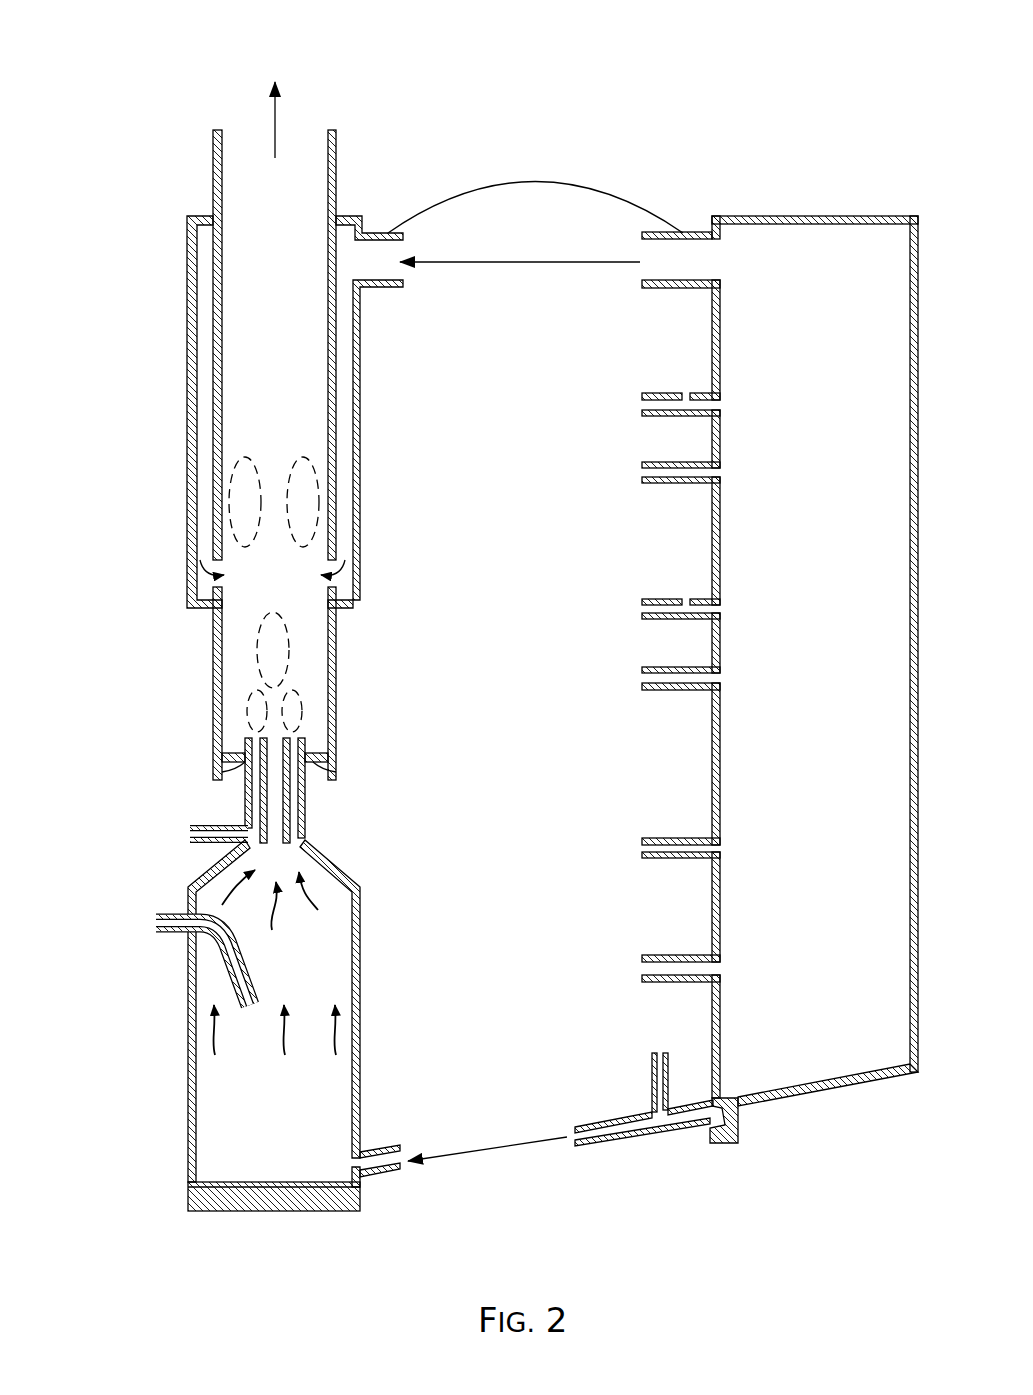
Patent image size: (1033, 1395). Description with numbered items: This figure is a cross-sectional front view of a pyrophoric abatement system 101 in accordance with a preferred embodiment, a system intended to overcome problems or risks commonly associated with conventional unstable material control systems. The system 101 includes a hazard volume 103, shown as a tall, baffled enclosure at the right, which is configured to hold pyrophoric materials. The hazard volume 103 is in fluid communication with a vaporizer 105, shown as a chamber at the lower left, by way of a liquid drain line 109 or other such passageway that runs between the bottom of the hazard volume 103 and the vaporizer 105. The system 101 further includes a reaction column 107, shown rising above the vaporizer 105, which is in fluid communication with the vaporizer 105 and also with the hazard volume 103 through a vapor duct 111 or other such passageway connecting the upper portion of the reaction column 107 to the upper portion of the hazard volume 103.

The pyrophoric abatement system 101 is at (125, 62).
The hazard volume 103 is at (862, 216).
The vaporizer 105 is at (194, 1128).
The reaction column 107 is at (188, 394).
The liquid drain line 109 is at (593, 1143).
The vapor duct 111 is at (517, 184).